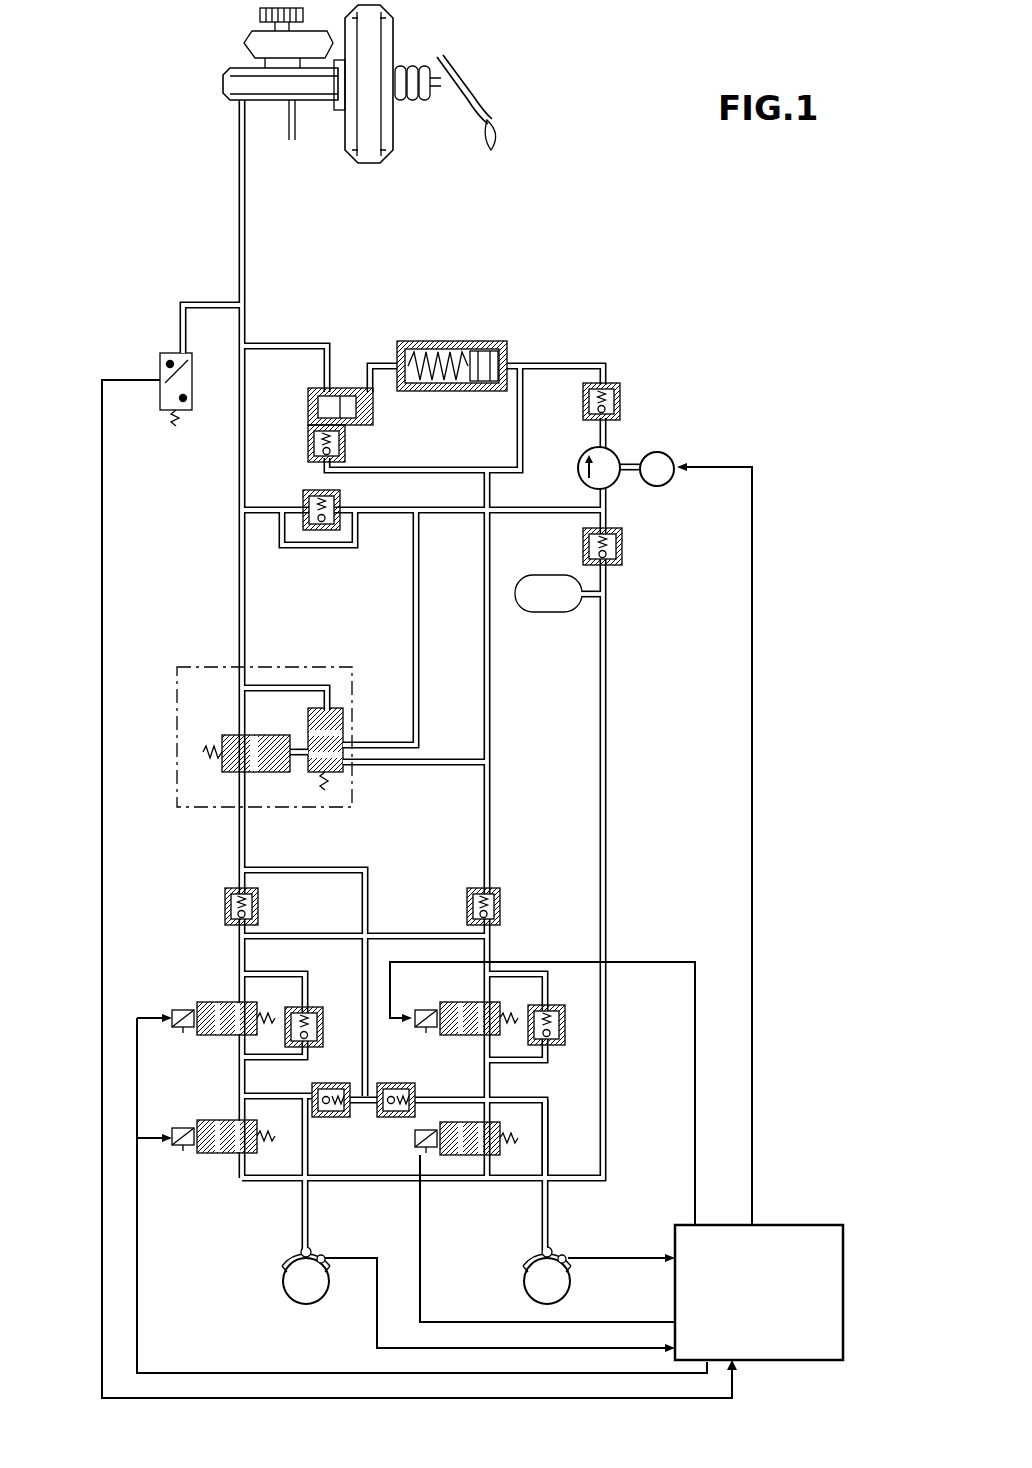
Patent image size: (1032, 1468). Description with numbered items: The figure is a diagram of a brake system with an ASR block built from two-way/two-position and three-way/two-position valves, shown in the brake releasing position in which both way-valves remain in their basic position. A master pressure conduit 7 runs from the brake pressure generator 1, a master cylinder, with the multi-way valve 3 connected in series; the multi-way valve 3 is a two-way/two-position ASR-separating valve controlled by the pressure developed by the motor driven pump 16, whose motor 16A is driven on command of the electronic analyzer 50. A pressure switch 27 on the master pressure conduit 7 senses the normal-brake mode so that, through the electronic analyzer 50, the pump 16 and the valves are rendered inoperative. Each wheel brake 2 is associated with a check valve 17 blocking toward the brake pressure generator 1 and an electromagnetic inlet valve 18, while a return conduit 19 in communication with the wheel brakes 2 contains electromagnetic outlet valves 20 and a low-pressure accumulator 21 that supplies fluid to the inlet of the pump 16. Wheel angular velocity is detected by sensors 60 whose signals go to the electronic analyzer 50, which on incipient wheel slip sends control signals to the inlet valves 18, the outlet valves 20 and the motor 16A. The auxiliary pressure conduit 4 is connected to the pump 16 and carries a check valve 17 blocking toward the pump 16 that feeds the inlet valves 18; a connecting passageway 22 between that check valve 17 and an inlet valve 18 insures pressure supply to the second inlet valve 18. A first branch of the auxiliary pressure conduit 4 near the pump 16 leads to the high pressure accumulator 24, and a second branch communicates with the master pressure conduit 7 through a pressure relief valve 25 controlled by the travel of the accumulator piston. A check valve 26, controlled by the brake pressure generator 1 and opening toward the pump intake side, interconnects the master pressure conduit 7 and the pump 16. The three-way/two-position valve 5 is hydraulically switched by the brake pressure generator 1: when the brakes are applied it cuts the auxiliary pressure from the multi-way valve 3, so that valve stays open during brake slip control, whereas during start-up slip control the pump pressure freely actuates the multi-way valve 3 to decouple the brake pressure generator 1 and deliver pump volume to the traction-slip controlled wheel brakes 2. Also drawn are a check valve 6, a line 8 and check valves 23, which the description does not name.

The brake pressure generator 1 is at (359, 82).
The wheel brake 2 is at (426, 1207).
The multi-way valve 3 is at (240, 734).
The auxiliary pressure conduit 4 is at (466, 742).
The 3-way/2-position valve 5 is at (292, 739).
The check valve 6 is at (625, 560).
The master pressure conduit 7 is at (234, 639).
The line 8 is at (422, 548).
The pump 16 is at (619, 455).
The motor 16A is at (693, 438).
The check valve 17 is at (365, 897).
The inlet valve 18 is at (368, 1002).
The return conduit 19 is at (460, 876).
The outlet valve 20 is at (345, 1154).
The low-pressure accumulator 21 is at (590, 607).
The connecting passageway 22 is at (364, 912).
The check valve 23 is at (364, 1078).
The high pressure accumulator 24 is at (452, 339).
The pressure relief valve 25 is at (342, 384).
The check valve 26 is at (301, 490).
The pressure switch 27 is at (181, 364).
The electronic analyzer 50 is at (777, 1329).
The sensor 60 is at (485, 1238).